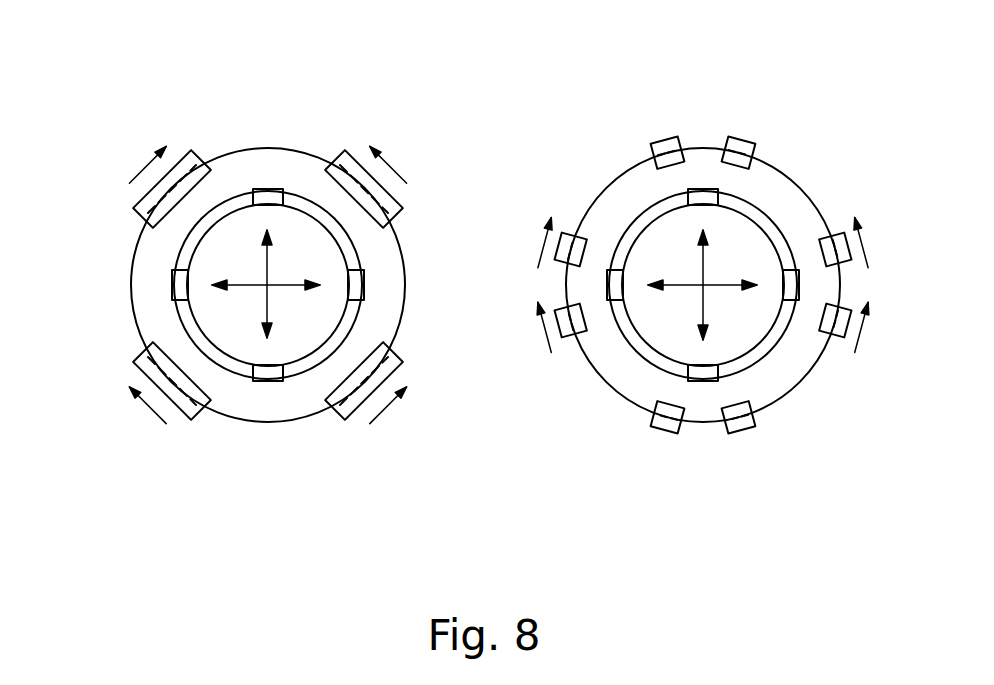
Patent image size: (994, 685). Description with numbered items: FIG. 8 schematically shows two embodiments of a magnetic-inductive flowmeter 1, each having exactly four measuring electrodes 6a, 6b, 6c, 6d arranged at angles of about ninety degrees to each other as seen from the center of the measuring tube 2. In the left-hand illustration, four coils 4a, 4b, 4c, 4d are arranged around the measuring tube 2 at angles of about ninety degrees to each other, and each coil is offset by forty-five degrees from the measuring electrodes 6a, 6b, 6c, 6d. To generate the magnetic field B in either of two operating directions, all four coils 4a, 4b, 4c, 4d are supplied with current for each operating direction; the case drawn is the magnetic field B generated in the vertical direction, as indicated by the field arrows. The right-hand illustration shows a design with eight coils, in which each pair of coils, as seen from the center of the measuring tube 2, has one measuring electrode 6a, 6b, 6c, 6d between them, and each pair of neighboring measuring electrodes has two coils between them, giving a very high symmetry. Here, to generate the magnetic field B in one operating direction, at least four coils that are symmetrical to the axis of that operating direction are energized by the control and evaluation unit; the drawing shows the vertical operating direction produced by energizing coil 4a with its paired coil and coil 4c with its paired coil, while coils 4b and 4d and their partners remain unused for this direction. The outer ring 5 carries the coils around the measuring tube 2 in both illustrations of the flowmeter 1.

The magnetic-inductive flowmeter 1 is at (423, 102).
The measuring tube 2 is at (238, 193).
The coil 4a is at (343, 152).
The coil 4b is at (145, 225).
The coil 4c is at (187, 418).
The coil 4d is at (338, 420).
The magnet carrier ring 5 is at (137, 337).
The measuring electrode 6a is at (362, 292).
The measuring electrode 6b is at (270, 193).
The measuring electrode 6c is at (173, 285).
The measuring electrode 6d is at (263, 380).